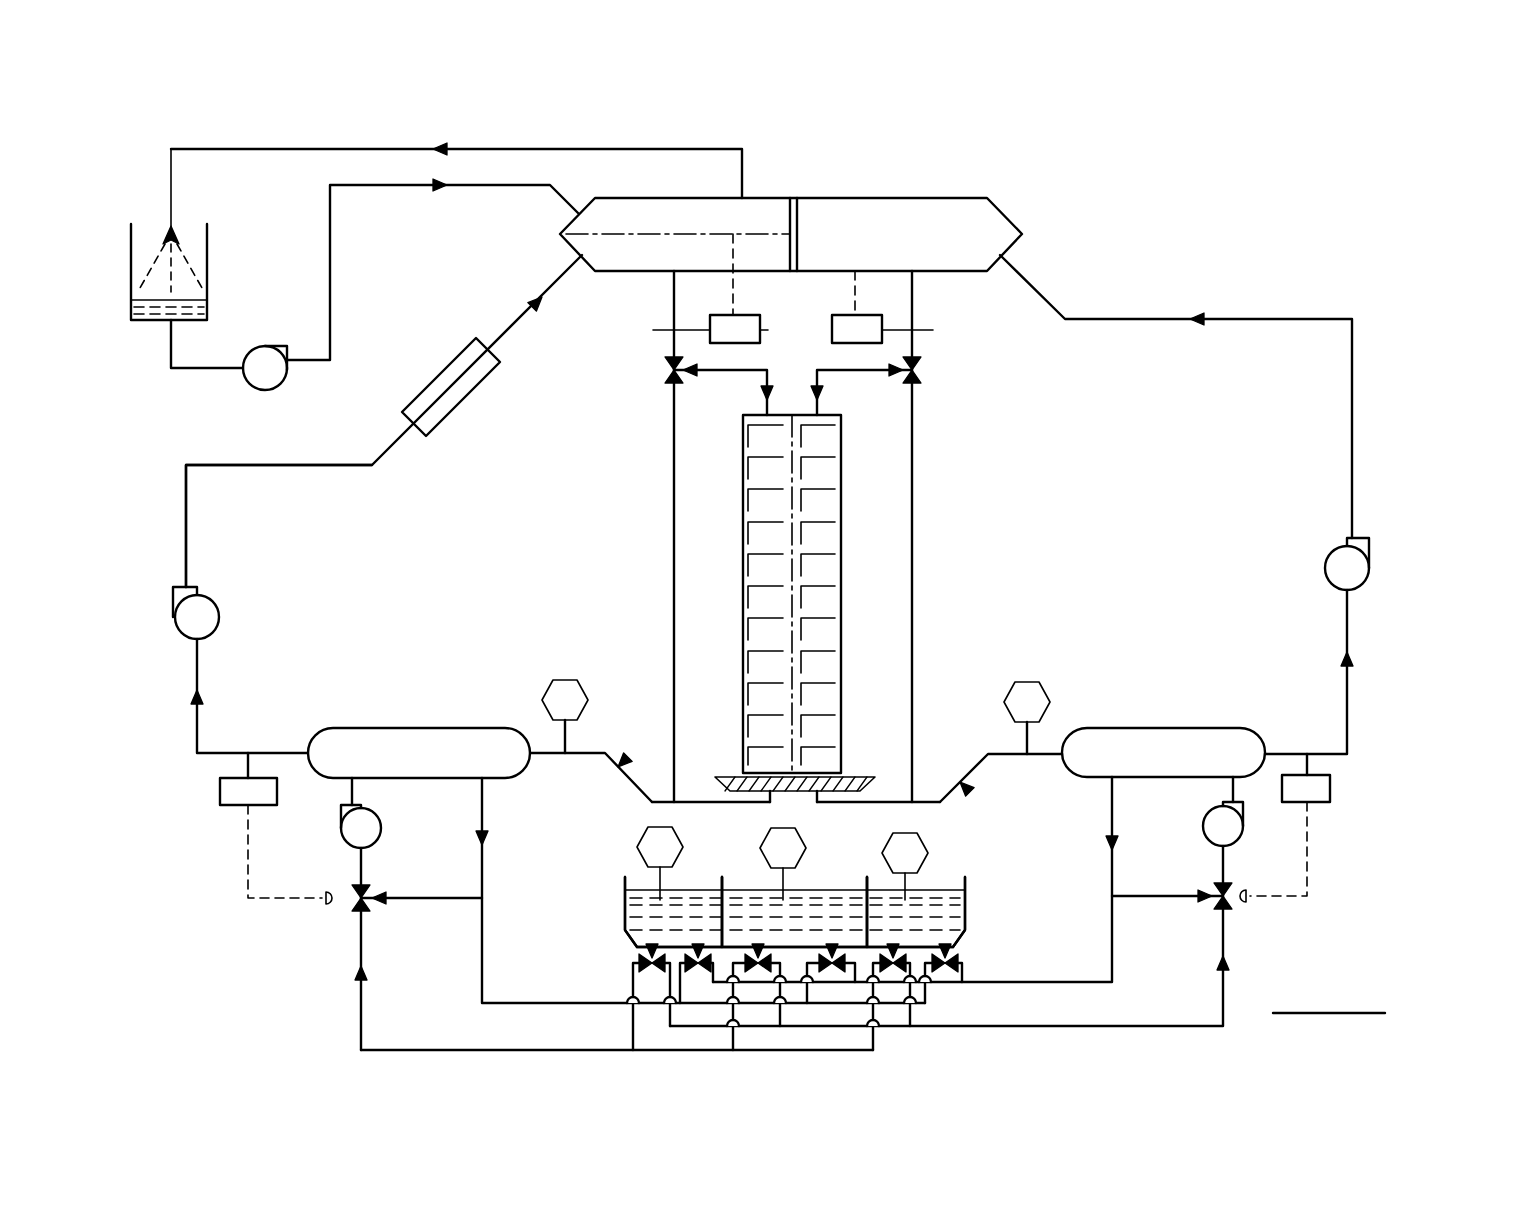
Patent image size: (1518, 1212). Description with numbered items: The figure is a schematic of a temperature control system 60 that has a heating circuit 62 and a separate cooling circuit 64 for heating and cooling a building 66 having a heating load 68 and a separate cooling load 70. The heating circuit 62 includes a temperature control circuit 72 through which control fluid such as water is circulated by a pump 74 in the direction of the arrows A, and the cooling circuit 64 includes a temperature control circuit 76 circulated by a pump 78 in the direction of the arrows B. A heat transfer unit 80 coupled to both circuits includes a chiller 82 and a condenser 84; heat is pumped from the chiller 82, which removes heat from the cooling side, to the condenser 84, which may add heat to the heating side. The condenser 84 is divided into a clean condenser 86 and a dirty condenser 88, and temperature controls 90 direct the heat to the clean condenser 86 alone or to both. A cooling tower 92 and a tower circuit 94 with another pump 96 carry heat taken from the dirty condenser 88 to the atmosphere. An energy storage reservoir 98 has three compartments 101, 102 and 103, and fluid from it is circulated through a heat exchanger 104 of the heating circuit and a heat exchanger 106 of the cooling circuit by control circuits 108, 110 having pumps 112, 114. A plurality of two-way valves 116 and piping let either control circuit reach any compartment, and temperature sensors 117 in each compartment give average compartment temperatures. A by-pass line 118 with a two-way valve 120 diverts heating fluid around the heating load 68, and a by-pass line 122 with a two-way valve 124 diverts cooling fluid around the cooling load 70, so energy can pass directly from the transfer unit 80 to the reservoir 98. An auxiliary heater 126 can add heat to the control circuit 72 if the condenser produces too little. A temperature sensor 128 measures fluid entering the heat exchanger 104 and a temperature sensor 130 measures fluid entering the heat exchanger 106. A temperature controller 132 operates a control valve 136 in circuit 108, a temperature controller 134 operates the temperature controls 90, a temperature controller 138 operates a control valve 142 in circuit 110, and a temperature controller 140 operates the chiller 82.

The temperature control system 60 is at (1240, 213).
The heating circuit 62 is at (162, 438).
The cooling circuit 64 is at (1380, 371).
The building 66 is at (842, 546).
The heating load 68 is at (762, 602).
The cooling load 70 is at (820, 605).
The temperature control circuit 72 is at (186, 506).
The pump 74 is at (220, 617).
The temperature control circuit 76 is at (1351, 406).
The pump 78 is at (1326, 560).
The heat transfer unit 80 is at (791, 198).
The chiller 82 is at (905, 198).
The condenser 84 is at (688, 198).
The clean condenser 86 is at (670, 266).
The dirty condenser 88 is at (670, 230).
The temperature controls 90 is at (733, 250).
The cooling tower 92 is at (207, 275).
The tower circuit 94 is at (331, 291).
The pump 96 is at (278, 386).
The energy storage reservoir 98 is at (992, 834).
The reservoir compartment 101 is at (673, 912).
The reservoir compartment 102 is at (794, 912).
The reservoir compartment 103 is at (916, 912).
The heat exchanger 104 is at (410, 728).
The heat exchanger 106 is at (1135, 728).
The control circuit 108 is at (482, 948).
The control circuit 110 is at (1112, 940).
The pump 112 is at (372, 820).
The pump 114 is at (1206, 820).
The two-way valves 116 is at (640, 962).
The temperature sensors 117 is at (672, 832).
The by-pass line 118 is at (674, 520).
The two-way valve 120 is at (665, 370).
The by-pass line 122 is at (913, 518).
The two-way valve 124 is at (921, 370).
The auxiliary heater 126 is at (488, 390).
The temperature sensor 128 is at (540, 672).
The temperature sensor 130 is at (1010, 672).
The temperature controller 132 is at (222, 792).
The temperature controller 134 is at (712, 318).
The control valve 136 is at (326, 905).
The temperature controller 138 is at (1330, 791).
The temperature controller 140 is at (890, 311).
The control valve 142 is at (1250, 904).